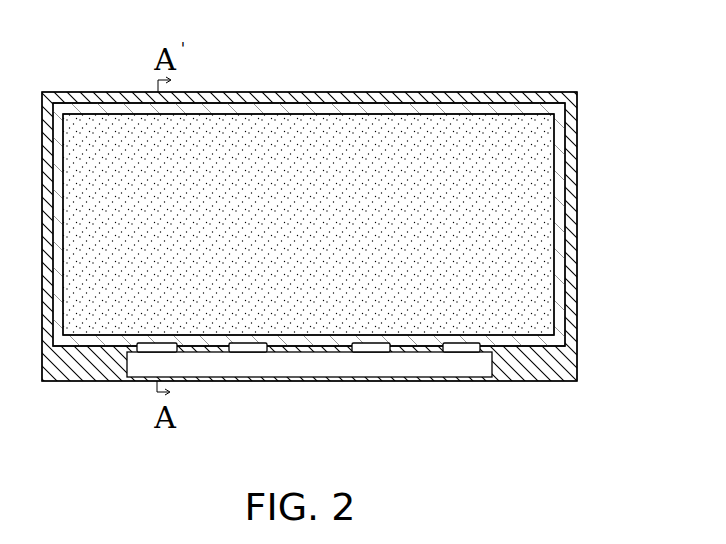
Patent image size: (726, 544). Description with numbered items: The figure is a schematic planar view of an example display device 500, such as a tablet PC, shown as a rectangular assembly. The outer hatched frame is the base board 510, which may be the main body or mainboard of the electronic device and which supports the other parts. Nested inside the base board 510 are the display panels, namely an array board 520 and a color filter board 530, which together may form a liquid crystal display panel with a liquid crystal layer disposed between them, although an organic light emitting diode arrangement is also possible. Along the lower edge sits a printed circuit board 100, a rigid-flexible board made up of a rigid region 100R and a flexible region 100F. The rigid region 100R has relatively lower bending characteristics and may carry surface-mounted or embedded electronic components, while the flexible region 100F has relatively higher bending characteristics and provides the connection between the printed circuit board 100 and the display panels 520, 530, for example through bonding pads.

The display device 500 is at (445, 43).
The base board 510 is at (576, 367).
The array board 520 is at (560, 293).
The color filter board 530 is at (528, 192).
The printed circuit board 100 is at (309, 405).
The rigid region 100R is at (303, 369).
The flexible region 100F is at (375, 355).